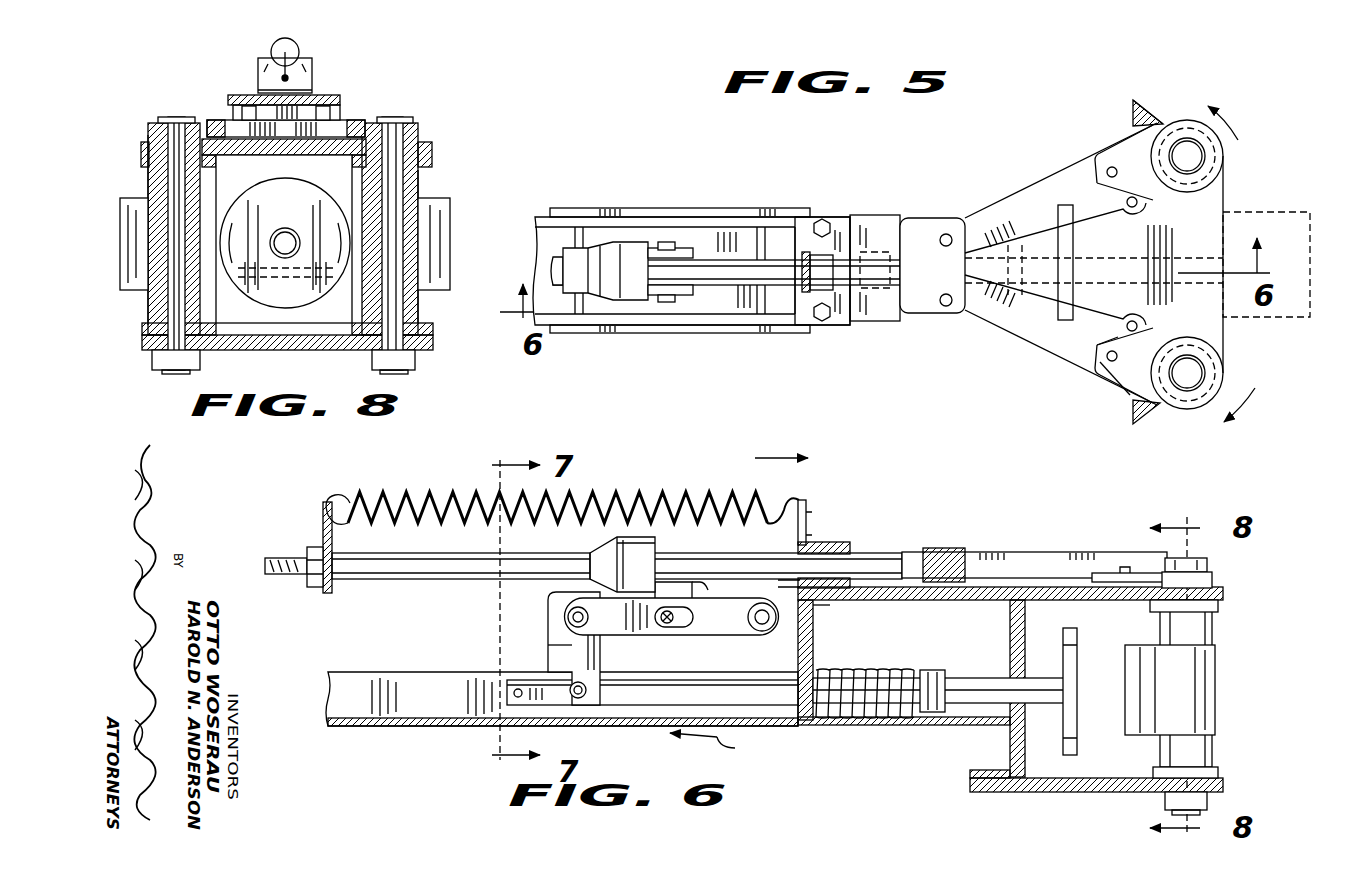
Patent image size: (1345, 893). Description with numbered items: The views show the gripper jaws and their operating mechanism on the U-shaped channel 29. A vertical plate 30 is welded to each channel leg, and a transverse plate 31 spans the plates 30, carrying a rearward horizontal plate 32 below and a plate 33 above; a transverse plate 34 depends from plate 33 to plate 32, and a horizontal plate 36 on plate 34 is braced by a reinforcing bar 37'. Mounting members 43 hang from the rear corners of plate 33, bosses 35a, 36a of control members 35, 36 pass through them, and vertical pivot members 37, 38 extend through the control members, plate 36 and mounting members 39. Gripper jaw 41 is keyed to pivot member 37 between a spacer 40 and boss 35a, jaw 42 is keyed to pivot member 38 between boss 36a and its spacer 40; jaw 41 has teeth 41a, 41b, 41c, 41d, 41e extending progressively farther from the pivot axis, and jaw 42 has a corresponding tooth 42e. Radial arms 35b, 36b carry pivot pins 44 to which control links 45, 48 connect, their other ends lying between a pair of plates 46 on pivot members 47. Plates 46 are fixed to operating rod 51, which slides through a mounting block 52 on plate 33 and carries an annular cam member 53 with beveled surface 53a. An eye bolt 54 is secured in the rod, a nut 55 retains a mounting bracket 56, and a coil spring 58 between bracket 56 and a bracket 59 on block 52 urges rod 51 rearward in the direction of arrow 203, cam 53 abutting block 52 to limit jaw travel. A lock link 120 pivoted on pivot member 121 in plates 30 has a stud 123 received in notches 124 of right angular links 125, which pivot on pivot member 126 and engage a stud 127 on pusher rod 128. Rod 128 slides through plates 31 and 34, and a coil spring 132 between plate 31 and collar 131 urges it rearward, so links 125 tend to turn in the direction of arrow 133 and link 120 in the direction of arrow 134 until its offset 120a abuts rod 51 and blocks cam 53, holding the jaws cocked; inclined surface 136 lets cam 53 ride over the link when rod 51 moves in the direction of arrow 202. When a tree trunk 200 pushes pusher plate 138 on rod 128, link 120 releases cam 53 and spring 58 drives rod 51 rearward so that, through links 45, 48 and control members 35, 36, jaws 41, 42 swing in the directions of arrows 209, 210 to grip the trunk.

In FIG. 8, the U-shaped channel 29 is at (272, 281).
In FIG. 5, the U-shaped channel 29 is at (696, 236).
In FIG. 6, the U-shaped channel 29 is at (408, 727).
In FIG. 5, the vertical plate 30 is at (740, 209).
In FIG. 6, the vertical plate 30 is at (547, 628).
In FIG. 5, the transverse plate 31 is at (799, 330).
In FIG. 6, the transverse plate 31 is at (814, 667).
In FIG. 6, the horizontal plate 32 is at (850, 726).
In FIG. 8, the plate 33 is at (248, 156).
In FIG. 5, the plate 33 is at (842, 330).
In FIG. 6, the plate 33 is at (900, 601).
In FIG. 6, the transverse plate 34 is at (1026, 632).
In FIG. 8, the second control member 35 is at (423, 126).
In FIG. 5, the second control member 35 is at (1164, 122).
In FIG. 8, the boss portion 35a is at (419, 181).
In FIG. 6, the boss portion 35a is at (1214, 624).
In FIG. 8, the radially extending arm 35b is at (356, 121).
In FIG. 6, the radially extending arm 35b is at (1108, 573).
In FIG. 8, the gripper control member 36 is at (150, 124).
In FIG. 5, the gripper control member 36 is at (1116, 382).
In FIG. 6, the gripper control member 36 is at (1068, 793).
In FIG. 8, the boss portion 36a is at (162, 183).
In FIG. 8, the radially extending arm 36b is at (212, 121).
In FIG. 5, the radially extending arm 36b is at (1097, 372).
In FIG. 8, the vertical pivot member 37 is at (413, 232).
In FIG. 5, the vertical pivot member 37 is at (1190, 392).
In FIG. 6, the vertical pivot member 37 is at (1218, 573).
In FIG. 6, the reinforcing bar 37' is at (965, 773).
In FIG. 8, the vertical pivot member 38 is at (176, 117).
In FIG. 8, the mounting member 39 is at (146, 336).
In FIG. 8, the spacer 40 is at (419, 306).
In FIG. 8, the gripper jaw 41 is at (448, 215).
In FIG. 6, the gripper jaw 41 is at (1216, 676).
In FIG. 5, the tooth 41a is at (1226, 165).
In FIG. 5, the tooth 41b is at (1094, 160).
In FIG. 5, the tooth 41c is at (1108, 166).
In FIG. 5, the tooth 41d is at (1132, 124).
In FIG. 5, the tooth 41e is at (1134, 108).
In FIG. 8, the jaw 42 is at (137, 275).
In FIG. 5, the tooth 42e is at (1133, 425).
In FIG. 8, the mounting member 43 is at (141, 160).
In FIG. 8, the pivot pin 44 is at (342, 106).
In FIG. 5, the pivot pin 44 is at (1128, 209).
In FIG. 8, the control link 45 is at (243, 110).
In FIG. 5, the control link 45 is at (988, 325).
In FIG. 5, the plates 46 is at (912, 315).
In FIG. 5, the pivot member 47 is at (945, 234).
In FIG. 6, the pivot member 47 is at (956, 548).
In FIG. 5, the second control link 48 is at (978, 230).
In FIG. 6, the second control link 48 is at (1015, 553).
In FIG. 5, the operating rod 51 is at (735, 284).
In FIG. 6, the operating rod 51 is at (357, 580).
In FIG. 8, the mounting block 52 is at (331, 96).
In FIG. 5, the mounting block 52 is at (856, 228).
In FIG. 6, the mounting block 52 is at (848, 544).
In FIG. 5, the annular cam member 53 is at (643, 302).
In FIG. 6, the annular cam member 53 is at (642, 537).
In FIG. 6, the annular beveled surface 53a is at (590, 556).
In FIG. 6, the eye bolt 54 is at (298, 575).
In FIG. 6, the nut 55 is at (323, 532).
In FIG. 8, the mounting bracket 56 is at (294, 44).
In FIG. 6, the mounting bracket 56 is at (325, 500).
In FIG. 6, the coil spring 58 is at (457, 492).
In FIG. 8, the bracket 59 is at (299, 66).
In FIG. 5, the bracket 59 is at (830, 252).
In FIG. 6, the bracket 59 is at (808, 520).
In FIG. 6, the lock link 120 is at (708, 628).
In FIG. 6, the offset 120a is at (662, 596).
In FIG. 5, the transverse pivot member 121 is at (758, 300).
In FIG. 6, the transverse pivot member 121 is at (772, 586).
In FIG. 5, the transverse stud 123 is at (666, 242).
In FIG. 6, the transverse stud 123 is at (667, 624).
In FIG. 6, the notches 124 is at (688, 628).
In FIG. 5, the operating links 125 is at (593, 250).
In FIG. 6, the operating links 125 is at (636, 630).
In FIG. 5, the transverse pivot member 126 is at (578, 232).
In FIG. 6, the transverse pivot member 126 is at (568, 615).
In FIG. 6, the stud 127 is at (549, 706).
In FIG. 8, the pusher rod 128 is at (292, 233).
In FIG. 6, the pusher rod 128 is at (1050, 705).
In FIG. 6, the collar 131 is at (940, 672).
In FIG. 6, the coil spring 132 is at (866, 672).
In FIG. 6, the arrow 133 is at (560, 645).
In FIG. 6, the arrow 134 is at (814, 618).
In FIG. 6, the inclined surface 136 is at (710, 590).
In FIG. 8, the pusher plate 138 is at (270, 300).
In FIG. 6, the pusher plate 138 is at (1078, 745).
In FIG. 5, the tree trunk 200 is at (1284, 212).
In FIG. 6, the arrow 202 is at (735, 748).
In FIG. 6, the arrow 203 is at (760, 456).
In FIG. 5, the arrow 209 is at (1238, 138).
In FIG. 5, the arrow 210 is at (1255, 390).